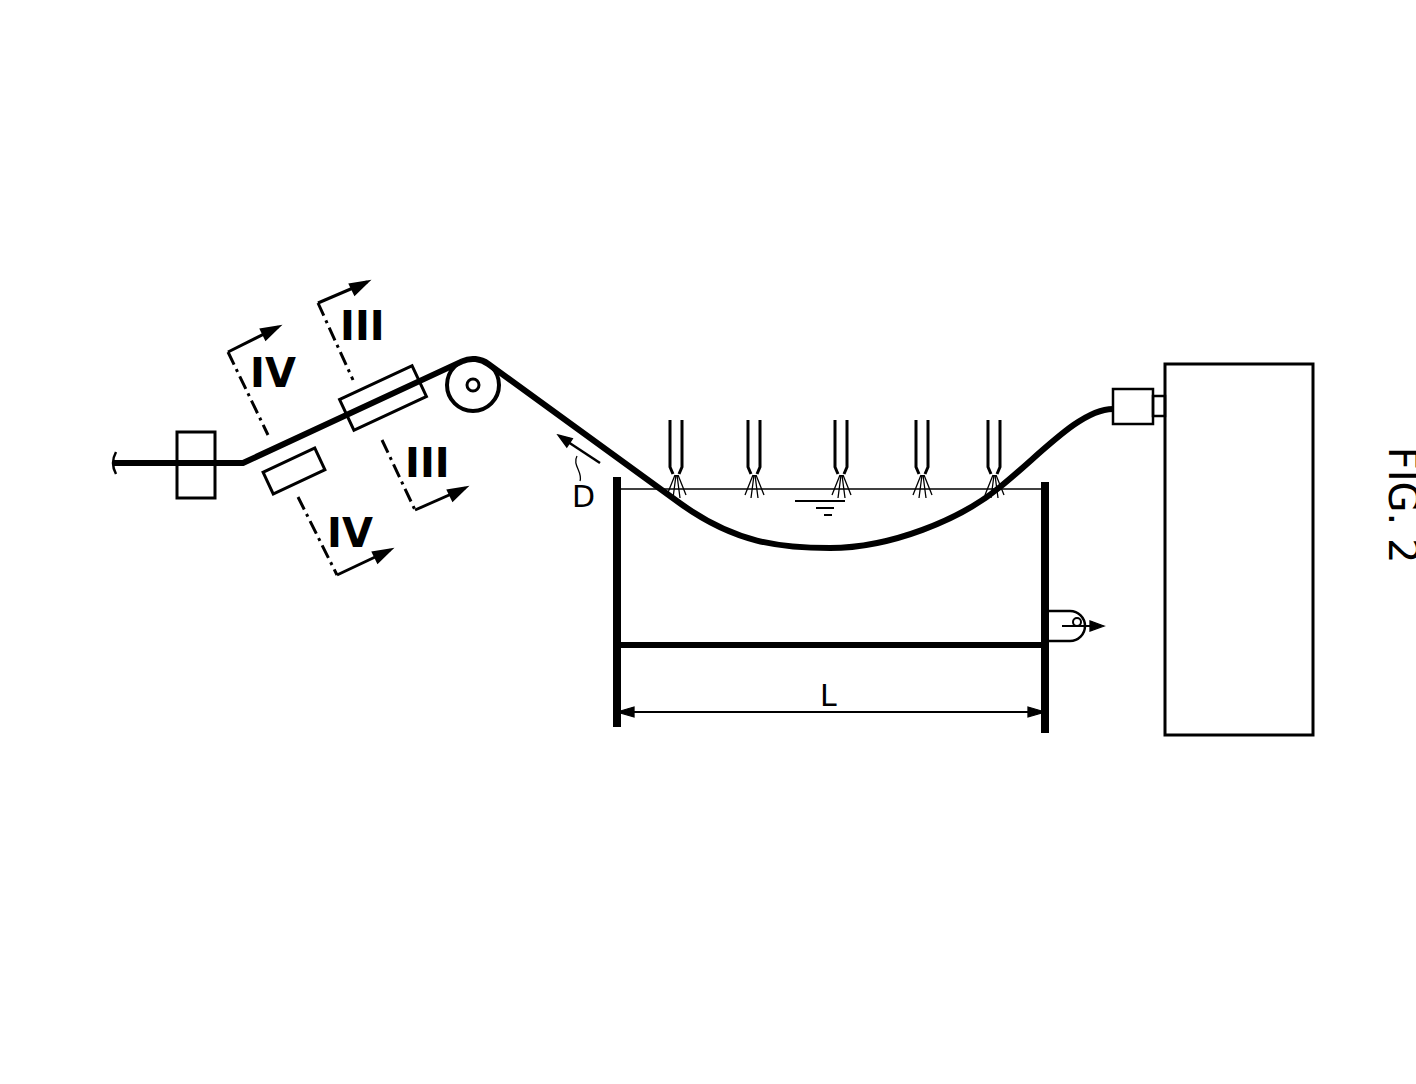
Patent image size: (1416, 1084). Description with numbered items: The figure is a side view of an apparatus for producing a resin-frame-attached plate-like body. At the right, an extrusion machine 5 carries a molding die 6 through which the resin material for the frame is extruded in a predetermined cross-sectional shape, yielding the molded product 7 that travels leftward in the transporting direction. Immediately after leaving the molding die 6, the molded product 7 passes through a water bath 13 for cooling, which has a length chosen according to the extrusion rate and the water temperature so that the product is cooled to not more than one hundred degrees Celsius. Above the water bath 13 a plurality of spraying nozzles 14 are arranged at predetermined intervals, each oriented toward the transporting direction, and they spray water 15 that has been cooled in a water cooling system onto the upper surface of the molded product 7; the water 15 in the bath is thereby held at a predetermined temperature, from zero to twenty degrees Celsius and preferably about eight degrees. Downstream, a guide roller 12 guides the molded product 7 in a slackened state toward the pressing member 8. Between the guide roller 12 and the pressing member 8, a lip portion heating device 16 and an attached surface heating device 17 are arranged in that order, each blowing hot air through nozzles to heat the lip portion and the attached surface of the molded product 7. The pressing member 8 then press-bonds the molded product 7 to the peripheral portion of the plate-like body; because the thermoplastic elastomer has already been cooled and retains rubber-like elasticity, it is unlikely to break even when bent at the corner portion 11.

The extrusion machine 5 is at (1228, 398).
The molding die 6 is at (1131, 408).
The molded product 7 is at (575, 420).
The pressing member 8 is at (199, 485).
The corner portion 11 is at (138, 456).
The guide roller 12 is at (486, 408).
The water bath 13 is at (613, 584).
The spraying nozzles 14 is at (749, 443).
The water 15 is at (846, 615).
The lip portion heating device 16 is at (403, 377).
The attached surface heating device 17 is at (281, 476).